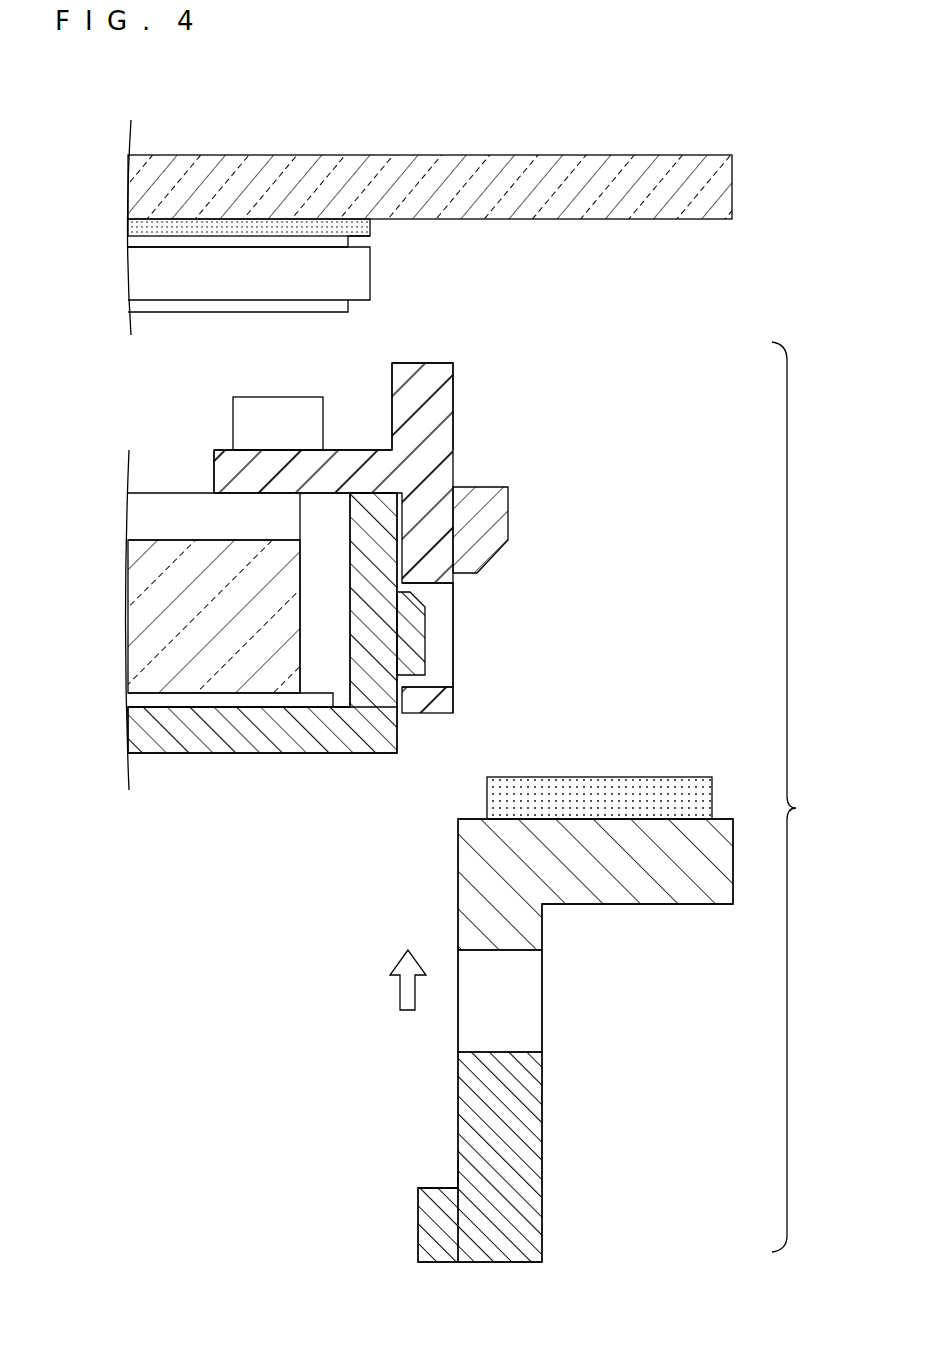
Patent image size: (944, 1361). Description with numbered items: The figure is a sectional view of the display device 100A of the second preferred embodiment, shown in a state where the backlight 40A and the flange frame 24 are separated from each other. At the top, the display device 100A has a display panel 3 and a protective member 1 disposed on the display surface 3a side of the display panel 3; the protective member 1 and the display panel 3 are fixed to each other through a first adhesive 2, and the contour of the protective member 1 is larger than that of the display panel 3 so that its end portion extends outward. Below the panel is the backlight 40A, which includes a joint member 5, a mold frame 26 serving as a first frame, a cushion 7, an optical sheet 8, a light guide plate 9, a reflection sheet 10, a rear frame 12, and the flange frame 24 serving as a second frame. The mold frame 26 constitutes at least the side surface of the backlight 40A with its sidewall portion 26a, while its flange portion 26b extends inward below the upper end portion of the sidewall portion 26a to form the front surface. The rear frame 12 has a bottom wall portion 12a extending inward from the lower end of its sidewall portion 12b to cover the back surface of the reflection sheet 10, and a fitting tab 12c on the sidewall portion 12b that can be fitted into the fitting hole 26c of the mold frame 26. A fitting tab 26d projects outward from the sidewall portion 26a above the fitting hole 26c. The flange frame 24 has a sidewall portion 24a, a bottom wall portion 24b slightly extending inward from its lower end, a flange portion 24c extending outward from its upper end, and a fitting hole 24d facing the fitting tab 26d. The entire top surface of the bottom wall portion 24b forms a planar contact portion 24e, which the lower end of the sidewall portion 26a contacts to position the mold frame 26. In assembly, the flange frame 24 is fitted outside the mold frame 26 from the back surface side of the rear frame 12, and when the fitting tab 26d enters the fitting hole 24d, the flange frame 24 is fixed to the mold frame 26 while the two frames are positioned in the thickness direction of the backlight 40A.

The protective member 1 is at (722, 191).
The first adhesive 2 is at (127, 229).
The display panel 3 is at (122, 238).
The display surface 3a is at (300, 243).
The joint member 5 is at (712, 799).
The cushion 7 is at (245, 433).
The optical sheet 8 is at (135, 516).
The light guide plate 9 is at (130, 633).
The reflection sheet 10 is at (130, 701).
The rear frame 12 is at (233, 760).
The bottom wall portion 12a is at (130, 740).
The sidewall portion 12b is at (360, 566).
The fitting tab 12c is at (415, 657).
The flange frame 24 is at (548, 1242).
The sidewall portion 24a is at (522, 1152).
The bottom wall portion 24b is at (438, 1252).
The flange portion 24c is at (700, 897).
The fitting hole 24d is at (508, 1042).
The contact portion 24e is at (447, 1188).
The mold frame 26 is at (425, 360).
The sidewall portion 26a is at (447, 386).
The flange portion 26b is at (228, 472).
The fitting hole 26c is at (437, 590).
The fitting tab 26d is at (497, 549).
The backlight 40A is at (452, 799).
The display device 100A is at (138, 91).